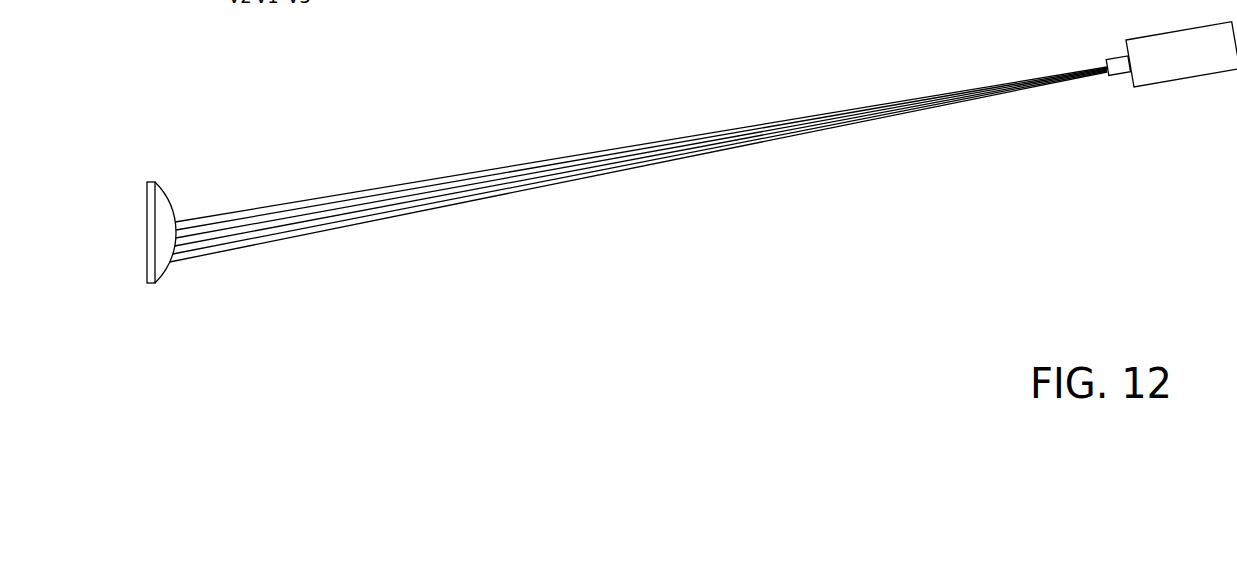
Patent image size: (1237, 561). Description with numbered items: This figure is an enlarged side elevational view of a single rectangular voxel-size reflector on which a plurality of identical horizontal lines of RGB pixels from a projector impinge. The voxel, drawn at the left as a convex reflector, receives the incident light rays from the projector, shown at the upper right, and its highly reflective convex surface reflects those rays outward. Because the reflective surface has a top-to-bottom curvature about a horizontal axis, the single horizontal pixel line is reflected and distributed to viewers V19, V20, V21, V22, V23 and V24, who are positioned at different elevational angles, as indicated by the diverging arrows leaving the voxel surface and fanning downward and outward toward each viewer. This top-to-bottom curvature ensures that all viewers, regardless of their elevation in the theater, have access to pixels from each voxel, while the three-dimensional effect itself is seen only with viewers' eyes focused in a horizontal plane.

The viewer V19 is at (165, 270).
The viewer V20 is at (171, 258).
The viewer V21 is at (177, 249).
The viewer V22 is at (178, 241).
The viewer V23 is at (177, 236).
The viewer V24 is at (177, 220).